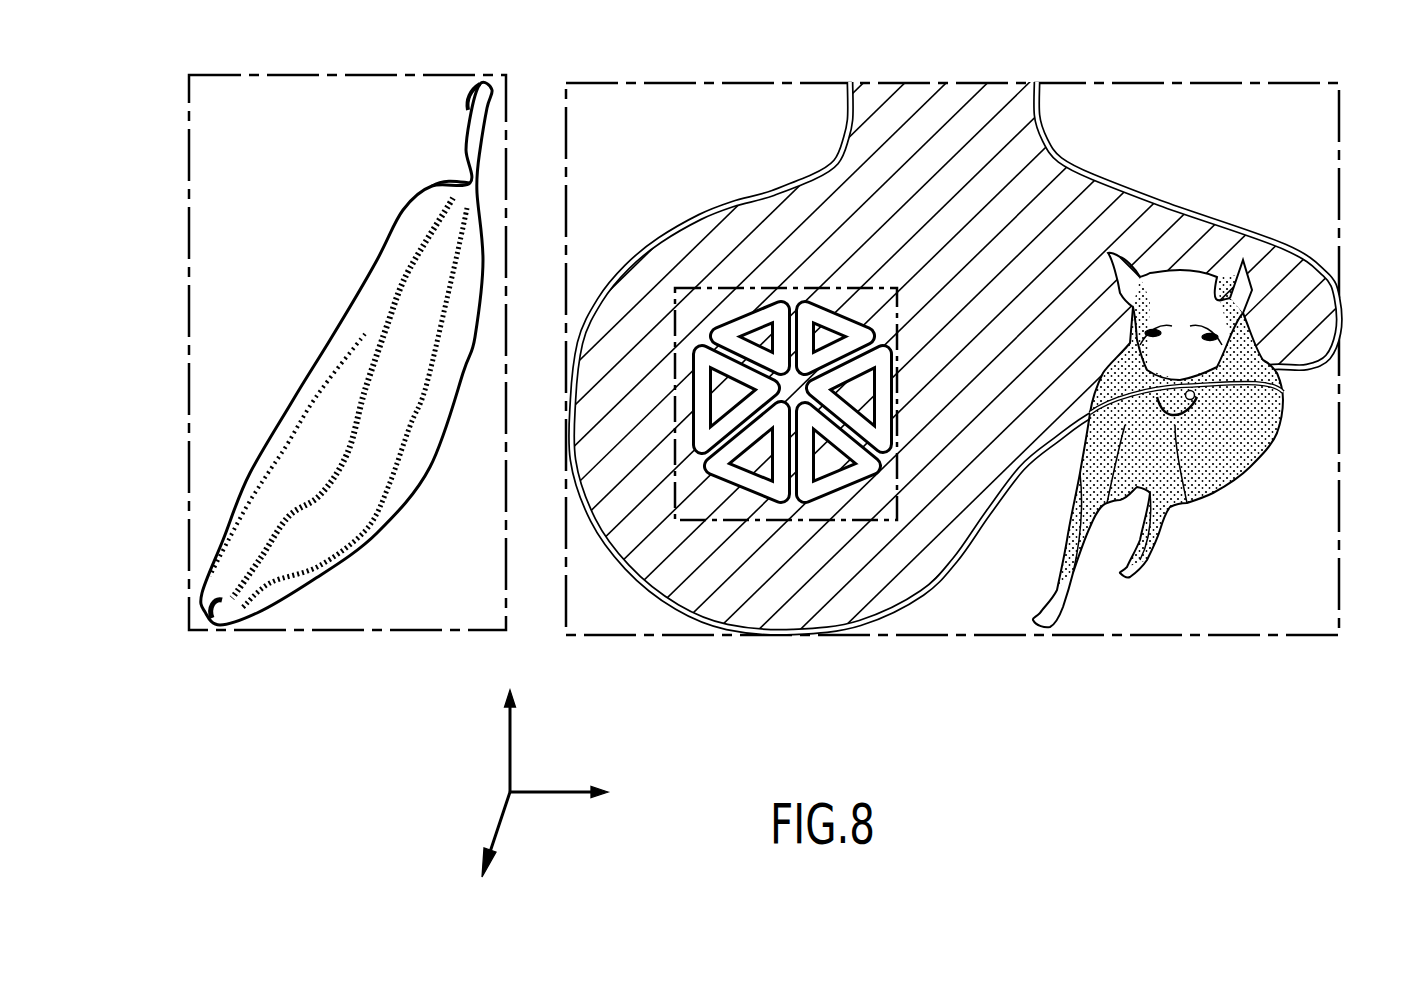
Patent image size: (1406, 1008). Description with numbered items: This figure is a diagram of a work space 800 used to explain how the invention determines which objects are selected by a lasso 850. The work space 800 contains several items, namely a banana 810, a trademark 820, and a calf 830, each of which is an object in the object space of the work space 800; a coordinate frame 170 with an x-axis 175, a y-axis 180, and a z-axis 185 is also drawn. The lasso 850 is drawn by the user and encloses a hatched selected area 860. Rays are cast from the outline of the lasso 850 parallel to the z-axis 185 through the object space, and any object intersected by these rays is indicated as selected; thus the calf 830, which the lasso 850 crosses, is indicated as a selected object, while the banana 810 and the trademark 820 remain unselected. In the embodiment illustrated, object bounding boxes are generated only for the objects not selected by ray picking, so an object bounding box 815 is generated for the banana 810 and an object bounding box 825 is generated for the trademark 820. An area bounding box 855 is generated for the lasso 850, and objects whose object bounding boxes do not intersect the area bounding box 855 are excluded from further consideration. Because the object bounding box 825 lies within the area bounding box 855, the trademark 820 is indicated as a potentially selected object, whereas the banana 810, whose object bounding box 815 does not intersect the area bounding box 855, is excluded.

The work space 800 is at (296, 762).
The banana 810 is at (280, 410).
The object bounding box 815 is at (189, 513).
The trademark 820 is at (823, 497).
The object bounding box 825 is at (753, 515).
The calf 830 is at (1287, 407).
The lasso 850 is at (736, 200).
The area bounding box 855 is at (1027, 637).
The selected area 860 is at (952, 122).
The coordinate frame 170 is at (485, 768).
The x-axis 175 is at (560, 790).
The y-axis 180 is at (511, 730).
The z-axis 185 is at (490, 840).